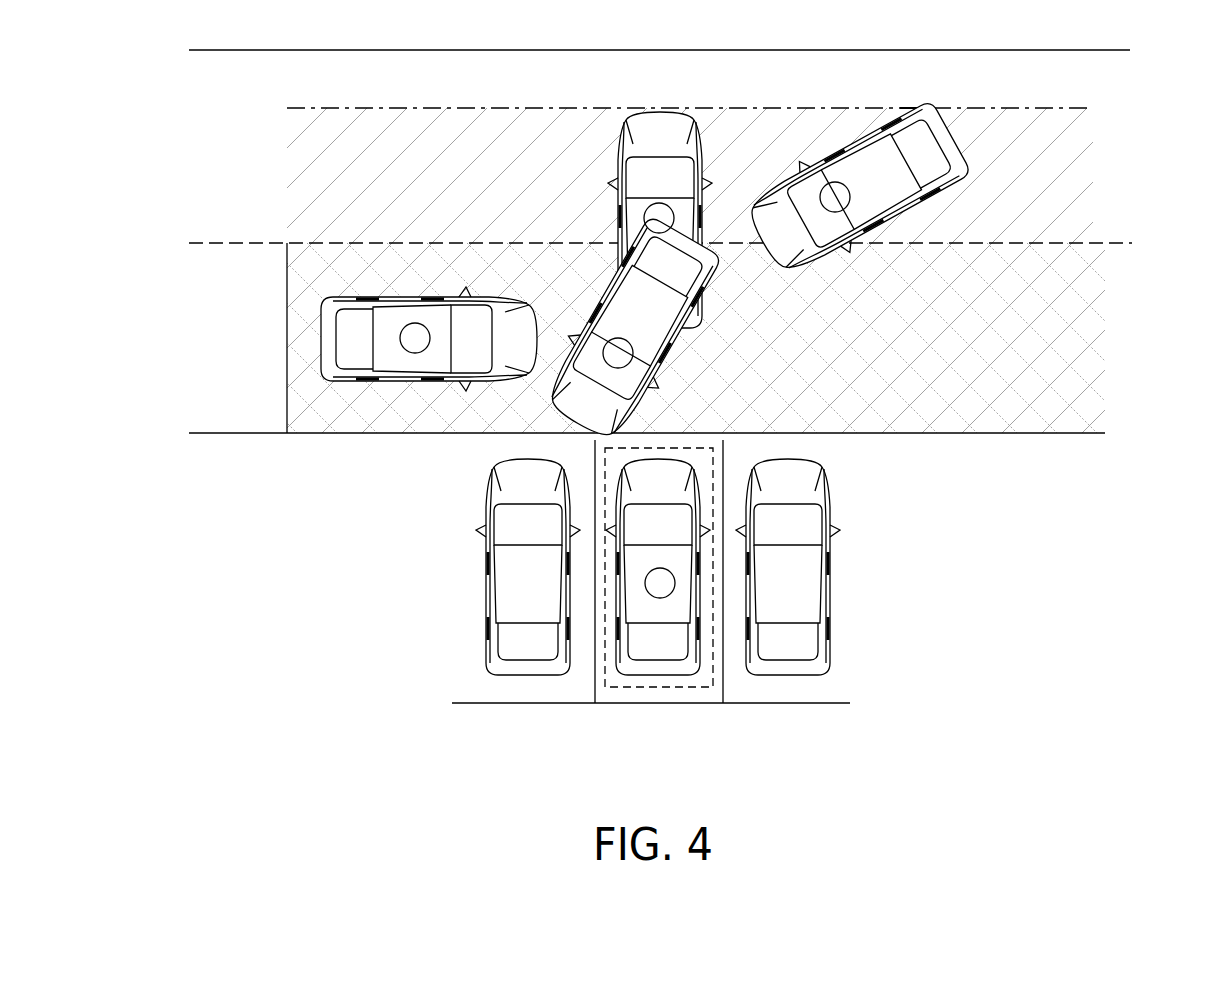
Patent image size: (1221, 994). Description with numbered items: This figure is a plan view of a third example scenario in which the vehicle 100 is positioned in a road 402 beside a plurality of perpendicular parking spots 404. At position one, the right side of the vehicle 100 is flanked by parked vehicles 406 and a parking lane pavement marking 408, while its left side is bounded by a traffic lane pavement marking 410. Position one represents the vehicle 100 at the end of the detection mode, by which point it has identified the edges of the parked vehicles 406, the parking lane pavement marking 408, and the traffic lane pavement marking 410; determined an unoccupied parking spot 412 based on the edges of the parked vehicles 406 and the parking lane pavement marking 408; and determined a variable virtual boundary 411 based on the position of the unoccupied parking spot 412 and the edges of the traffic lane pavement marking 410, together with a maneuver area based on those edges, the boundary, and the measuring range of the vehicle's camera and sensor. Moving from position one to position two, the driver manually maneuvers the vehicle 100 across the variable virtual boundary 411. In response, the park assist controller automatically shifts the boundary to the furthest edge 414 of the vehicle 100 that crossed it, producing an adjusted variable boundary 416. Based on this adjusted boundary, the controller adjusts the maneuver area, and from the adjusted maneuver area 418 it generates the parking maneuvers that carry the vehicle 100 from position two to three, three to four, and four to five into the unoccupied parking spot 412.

The vehicle 100 is at (658, 107).
The road 402 is at (160, 74).
The perpendicular parking spots 404 is at (268, 573).
The parked vehicles 406 is at (528, 675).
The parking lane pavement marking 408 is at (713, 705).
The traffic lane pavement marking 410 is at (245, 243).
The variable virtual boundary 411 is at (293, 243).
The unoccupied parking spot 412 is at (1114, 347).
The furthest edge 414 is at (908, 107).
The adjusted variable boundary 416 is at (1052, 107).
The adjusted maneuver area 418 is at (1114, 175).